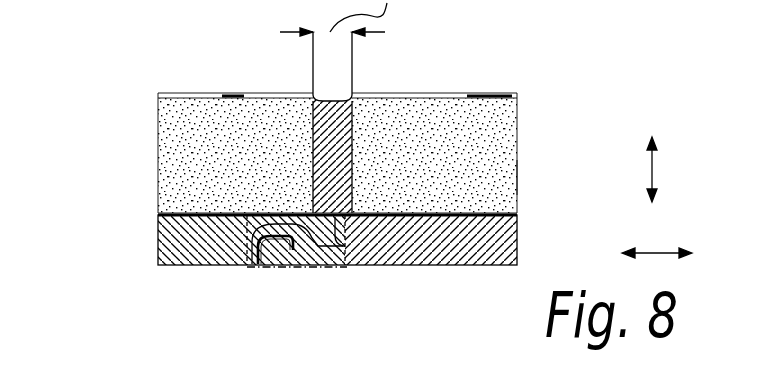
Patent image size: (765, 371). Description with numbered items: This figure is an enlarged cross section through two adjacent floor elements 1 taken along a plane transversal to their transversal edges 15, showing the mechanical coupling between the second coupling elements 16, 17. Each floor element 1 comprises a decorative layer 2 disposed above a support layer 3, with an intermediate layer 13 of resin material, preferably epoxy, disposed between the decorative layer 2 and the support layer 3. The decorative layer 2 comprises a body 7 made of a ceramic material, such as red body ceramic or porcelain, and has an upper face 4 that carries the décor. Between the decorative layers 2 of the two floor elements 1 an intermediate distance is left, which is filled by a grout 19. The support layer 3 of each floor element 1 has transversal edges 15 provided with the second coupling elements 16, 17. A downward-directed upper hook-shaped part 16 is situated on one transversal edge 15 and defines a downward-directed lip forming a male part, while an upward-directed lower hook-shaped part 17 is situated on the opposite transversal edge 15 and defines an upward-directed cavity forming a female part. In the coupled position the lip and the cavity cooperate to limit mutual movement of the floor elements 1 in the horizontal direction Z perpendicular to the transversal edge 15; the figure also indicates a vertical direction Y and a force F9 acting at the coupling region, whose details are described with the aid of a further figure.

The floor element 1 is at (192, 77).
The decorative layer 2 is at (158, 150).
The support layer 3 is at (168, 245).
The upper face 4 is at (158, 95).
The body 7 is at (517, 178).
The intermediate layer 13 is at (165, 215).
The transversal edge 15 is at (350, 267).
The upper hook-shaped part 16 is at (252, 242).
The lower hook-shaped part 17 is at (288, 244).
The grout 19 is at (350, 100).
The force F9 is at (293, 265).
The Y axis Y is at (652, 168).
The horizontal direction Z is at (658, 252).